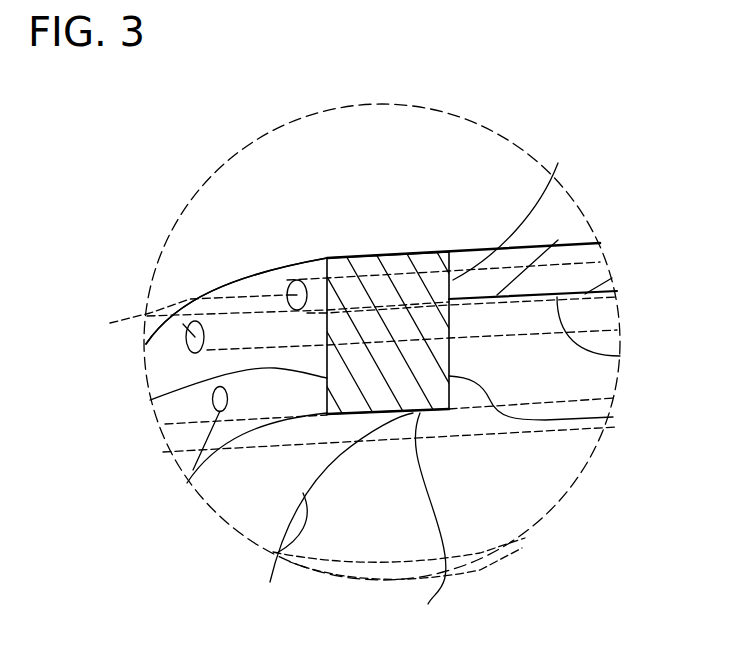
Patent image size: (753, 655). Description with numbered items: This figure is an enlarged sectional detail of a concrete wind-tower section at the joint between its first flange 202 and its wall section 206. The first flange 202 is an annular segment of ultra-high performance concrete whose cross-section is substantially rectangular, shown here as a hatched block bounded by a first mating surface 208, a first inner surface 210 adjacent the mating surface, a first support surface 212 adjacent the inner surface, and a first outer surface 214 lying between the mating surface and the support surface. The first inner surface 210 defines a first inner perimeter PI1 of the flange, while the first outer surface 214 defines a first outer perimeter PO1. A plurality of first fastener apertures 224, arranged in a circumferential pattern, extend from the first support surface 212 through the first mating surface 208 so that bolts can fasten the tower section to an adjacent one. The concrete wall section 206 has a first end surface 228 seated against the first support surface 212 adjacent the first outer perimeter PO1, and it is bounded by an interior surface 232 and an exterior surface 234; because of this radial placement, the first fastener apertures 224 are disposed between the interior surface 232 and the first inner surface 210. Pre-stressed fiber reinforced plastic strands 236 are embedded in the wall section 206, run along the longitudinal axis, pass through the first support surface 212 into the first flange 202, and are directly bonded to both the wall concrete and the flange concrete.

The first flange 202 is at (358, 194).
The wall section 206 is at (560, 272).
The first mating surface 208 is at (150, 400).
The first inner surface 210 is at (429, 523).
The first support surface 212 is at (613, 417).
The first outer surface 214 is at (424, 256).
The first fastener apertures 224 is at (188, 468).
The first end surface 228 is at (523, 206).
The interior surface 232 is at (600, 356).
The exterior surface 234 is at (558, 240).
The FRP strands 236 is at (185, 316).
The first outer perimeter PO1 is at (226, 292).
The first inner perimeter PI1 is at (331, 516).